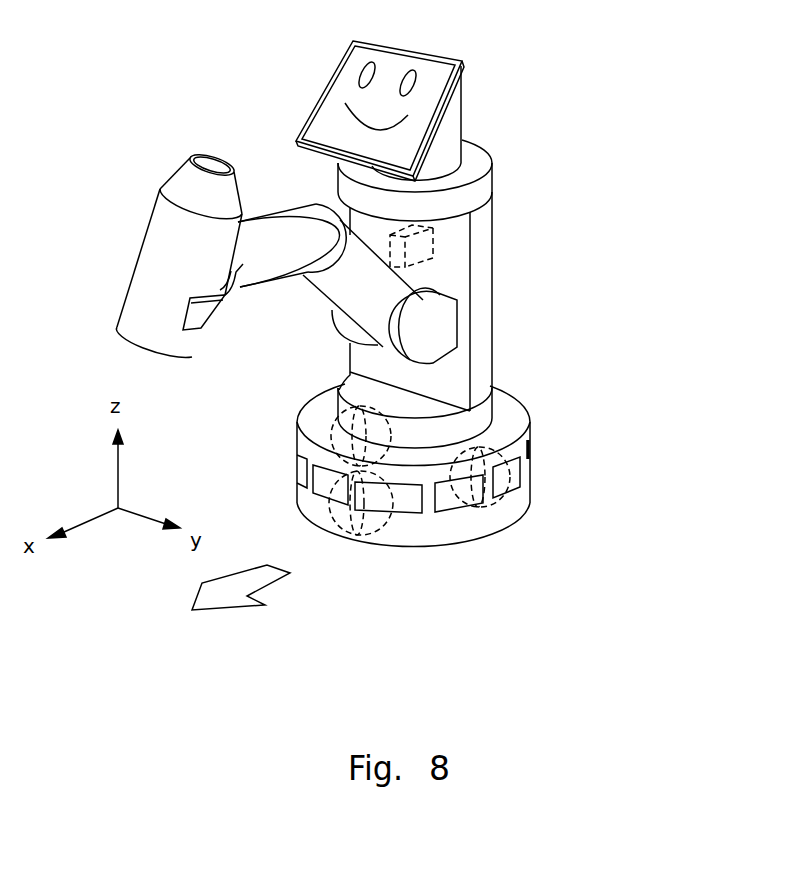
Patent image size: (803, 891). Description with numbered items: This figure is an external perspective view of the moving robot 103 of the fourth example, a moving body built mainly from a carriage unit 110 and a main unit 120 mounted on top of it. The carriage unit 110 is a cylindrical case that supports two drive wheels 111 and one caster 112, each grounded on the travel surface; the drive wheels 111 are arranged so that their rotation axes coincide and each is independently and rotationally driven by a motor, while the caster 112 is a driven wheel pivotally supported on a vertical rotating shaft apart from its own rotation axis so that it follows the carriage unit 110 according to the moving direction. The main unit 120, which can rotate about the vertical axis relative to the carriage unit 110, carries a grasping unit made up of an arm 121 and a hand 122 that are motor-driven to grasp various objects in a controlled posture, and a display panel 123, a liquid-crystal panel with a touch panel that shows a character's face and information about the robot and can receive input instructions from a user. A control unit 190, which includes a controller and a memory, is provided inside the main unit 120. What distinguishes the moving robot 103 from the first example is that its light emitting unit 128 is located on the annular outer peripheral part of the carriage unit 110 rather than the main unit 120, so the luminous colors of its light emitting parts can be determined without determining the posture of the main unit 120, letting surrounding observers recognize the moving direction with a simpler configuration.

The moving robot 103 is at (572, 97).
The carriage unit 110 is at (517, 412).
The drive wheel 111 is at (330, 440).
The caster 112 is at (383, 545).
The main unit 120 is at (480, 325).
The arm 121 is at (350, 283).
The hand 122 is at (209, 318).
The display panel 123 is at (349, 53).
The light emitting unit 128 is at (512, 470).
The control unit 190 is at (433, 252).